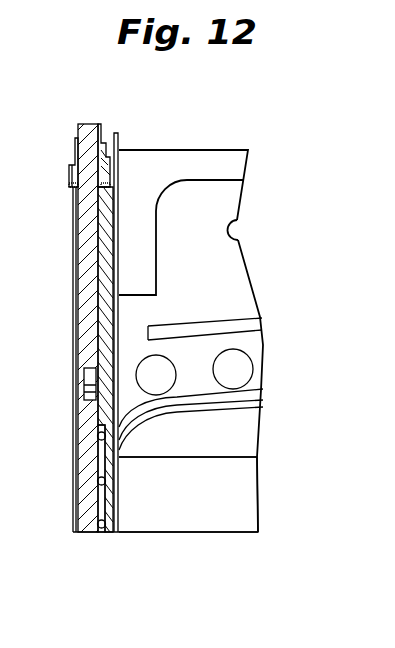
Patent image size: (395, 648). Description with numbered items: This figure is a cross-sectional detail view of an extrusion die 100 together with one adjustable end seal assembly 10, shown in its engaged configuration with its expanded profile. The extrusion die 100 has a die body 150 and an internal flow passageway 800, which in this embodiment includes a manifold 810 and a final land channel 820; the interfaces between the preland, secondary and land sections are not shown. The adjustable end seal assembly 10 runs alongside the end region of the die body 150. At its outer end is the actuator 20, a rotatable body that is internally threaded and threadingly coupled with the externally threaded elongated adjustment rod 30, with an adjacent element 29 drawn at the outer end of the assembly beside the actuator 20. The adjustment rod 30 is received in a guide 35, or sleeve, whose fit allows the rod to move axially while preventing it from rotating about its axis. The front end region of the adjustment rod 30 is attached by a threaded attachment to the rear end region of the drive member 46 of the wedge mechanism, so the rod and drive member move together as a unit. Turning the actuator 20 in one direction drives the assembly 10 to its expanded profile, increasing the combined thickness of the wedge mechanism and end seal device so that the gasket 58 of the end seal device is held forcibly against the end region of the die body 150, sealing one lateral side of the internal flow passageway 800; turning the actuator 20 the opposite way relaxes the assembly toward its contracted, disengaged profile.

The adjustable end seal assembly 10 is at (100, 541).
The actuator 20 is at (100, 125).
The flange 29 is at (77, 142).
The adjustment rod 30 is at (83, 273).
The guide 35 is at (105, 320).
The drive member 46 is at (83, 533).
The gasket 58 is at (118, 142).
The extrusion die 100 is at (232, 328).
The die body 150 is at (231, 158).
The internal flow passageway 800 is at (205, 522).
The manifold 810 is at (240, 428).
The final land channel 820 is at (233, 482).